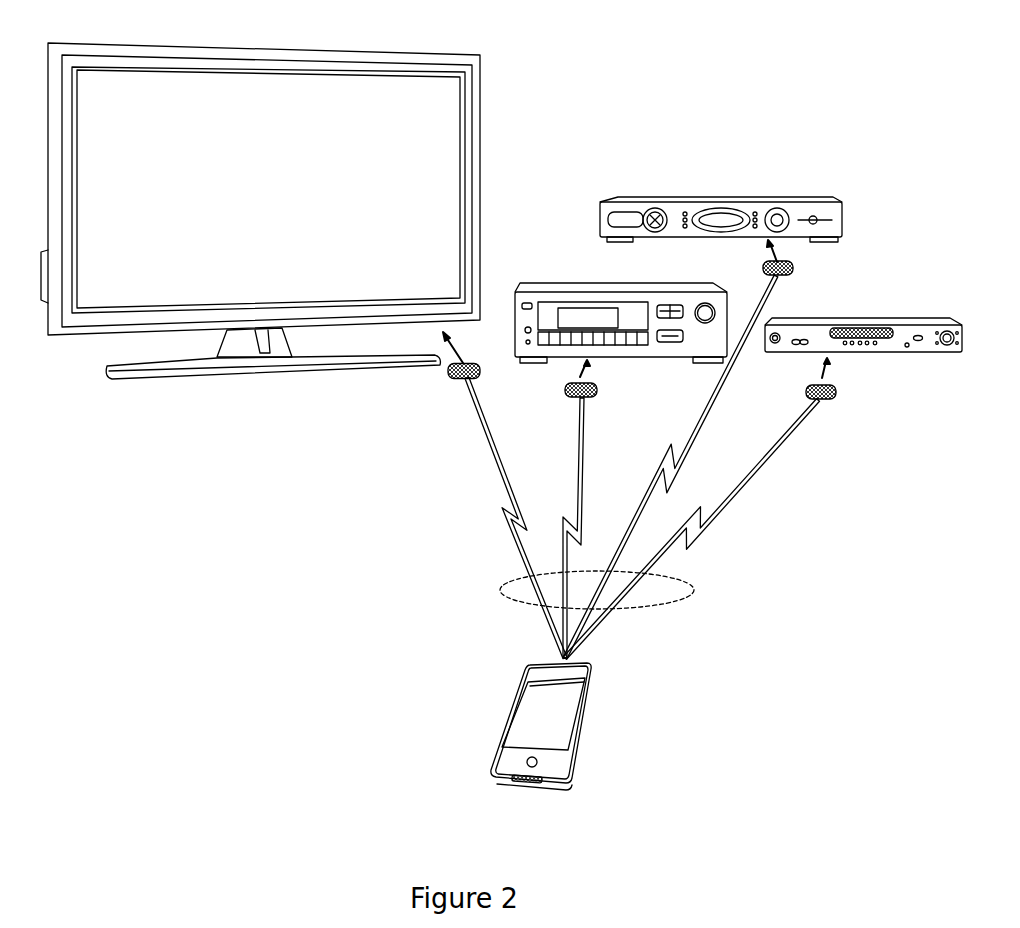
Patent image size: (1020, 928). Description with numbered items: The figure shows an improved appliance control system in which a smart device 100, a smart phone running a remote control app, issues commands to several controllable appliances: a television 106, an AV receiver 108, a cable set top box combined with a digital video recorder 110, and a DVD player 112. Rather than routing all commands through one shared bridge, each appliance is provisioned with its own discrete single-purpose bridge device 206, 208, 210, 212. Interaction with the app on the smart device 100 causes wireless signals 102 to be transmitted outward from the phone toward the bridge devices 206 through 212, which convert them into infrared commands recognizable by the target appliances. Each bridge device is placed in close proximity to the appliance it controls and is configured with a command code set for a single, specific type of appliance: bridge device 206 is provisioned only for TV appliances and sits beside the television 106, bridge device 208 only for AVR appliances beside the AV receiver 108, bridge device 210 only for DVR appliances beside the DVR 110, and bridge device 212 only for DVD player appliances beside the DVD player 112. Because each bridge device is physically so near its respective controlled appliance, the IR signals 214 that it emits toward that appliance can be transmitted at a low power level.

The smart device 100 is at (557, 788).
The wireless signals 102 is at (693, 590).
The television 106 is at (398, 52).
The AV receiver 108 is at (598, 270).
The cable set top box combined with a digital video recorder 110 is at (664, 195).
The DVD player 112 is at (875, 317).
The bridge device 206 is at (460, 380).
The bridge device 208 is at (577, 400).
The bridge device 210 is at (783, 276).
The bridge device 212 is at (832, 400).
The IR signals 214 is at (460, 352).